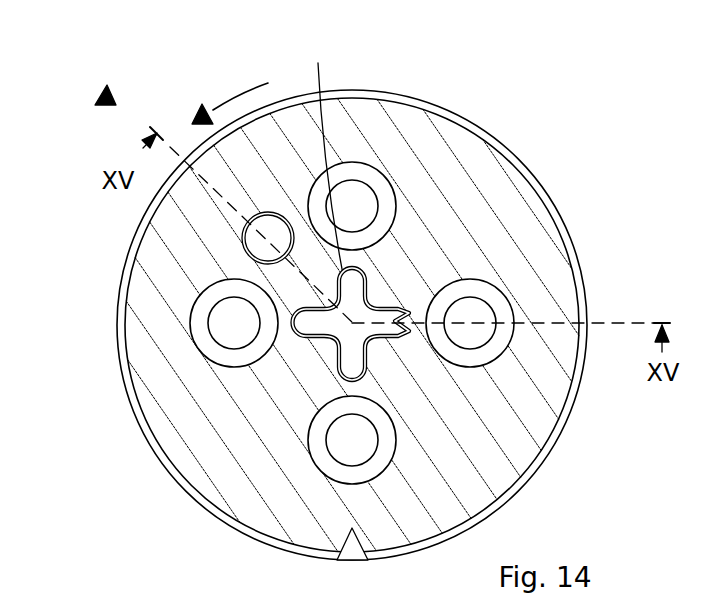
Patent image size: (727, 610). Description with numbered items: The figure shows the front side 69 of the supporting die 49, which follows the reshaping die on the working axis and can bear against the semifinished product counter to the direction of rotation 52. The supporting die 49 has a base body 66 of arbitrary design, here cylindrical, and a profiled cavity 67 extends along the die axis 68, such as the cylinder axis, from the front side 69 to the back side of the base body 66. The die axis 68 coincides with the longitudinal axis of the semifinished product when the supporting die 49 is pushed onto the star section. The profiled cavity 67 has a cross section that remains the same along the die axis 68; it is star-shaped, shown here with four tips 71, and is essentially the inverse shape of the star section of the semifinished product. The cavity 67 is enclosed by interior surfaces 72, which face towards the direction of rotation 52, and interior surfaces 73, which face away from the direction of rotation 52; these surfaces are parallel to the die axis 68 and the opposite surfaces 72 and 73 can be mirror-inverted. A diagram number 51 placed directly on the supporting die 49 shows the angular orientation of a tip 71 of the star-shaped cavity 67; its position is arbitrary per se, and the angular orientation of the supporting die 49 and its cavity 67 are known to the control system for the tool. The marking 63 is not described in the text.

The supporting die 49 is at (100, 94).
The diagram number 51 is at (342, 553).
The direction of rotation 52 is at (237, 93).
The central cross-shaped passage 63 is at (320, 310).
The base body 66 is at (433, 190).
The profiled cavity 67 is at (405, 320).
The die axis 68 is at (350, 258).
The front side 69 is at (373, 133).
The tips 71 is at (298, 330).
The interior surfaces 72 is at (378, 296).
The interior surfaces 73 is at (335, 290).